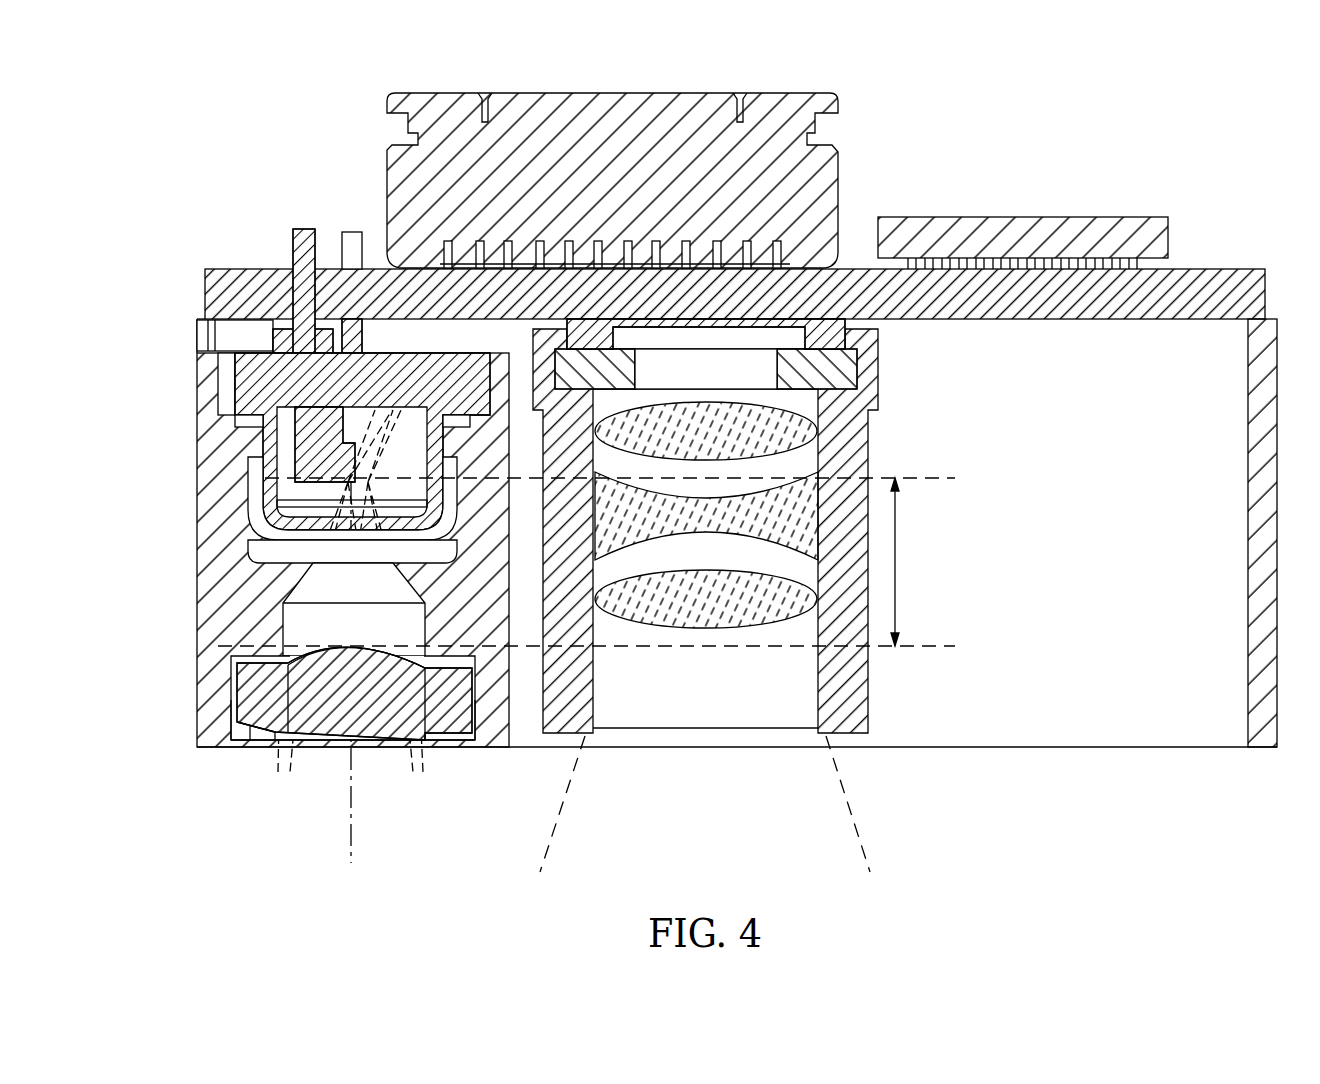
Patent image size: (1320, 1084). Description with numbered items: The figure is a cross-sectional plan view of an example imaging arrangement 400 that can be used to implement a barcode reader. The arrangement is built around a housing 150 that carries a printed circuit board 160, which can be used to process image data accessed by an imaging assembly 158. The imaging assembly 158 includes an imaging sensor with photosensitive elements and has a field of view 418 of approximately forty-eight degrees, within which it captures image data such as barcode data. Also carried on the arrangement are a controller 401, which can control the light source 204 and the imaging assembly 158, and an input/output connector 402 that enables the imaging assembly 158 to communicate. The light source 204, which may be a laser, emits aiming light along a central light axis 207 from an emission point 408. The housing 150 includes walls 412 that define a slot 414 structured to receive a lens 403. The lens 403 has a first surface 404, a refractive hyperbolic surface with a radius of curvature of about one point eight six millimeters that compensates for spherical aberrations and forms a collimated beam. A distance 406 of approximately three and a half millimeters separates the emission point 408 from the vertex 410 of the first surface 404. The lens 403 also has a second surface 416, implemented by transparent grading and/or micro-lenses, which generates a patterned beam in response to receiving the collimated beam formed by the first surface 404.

The housing 150 is at (1052, 748).
The imaging assembly 158 is at (833, 330).
The printed circuit board 160 is at (218, 296).
The light source 204 is at (228, 395).
The central light axis 207 is at (312, 602).
The imaging arrangement 400 is at (996, 178).
The controller 401 is at (1170, 239).
The input/output (IO) connector 402 is at (663, 110).
The lens 403 is at (245, 685).
The first surface 404 is at (255, 662).
The distance 406 is at (896, 575).
The emission point 408 is at (350, 477).
The vertex 410 is at (353, 649).
The walls 412 is at (230, 732).
The slot 414 is at (235, 722).
The second surface 416 is at (313, 740).
The field of view 418 is at (545, 860).